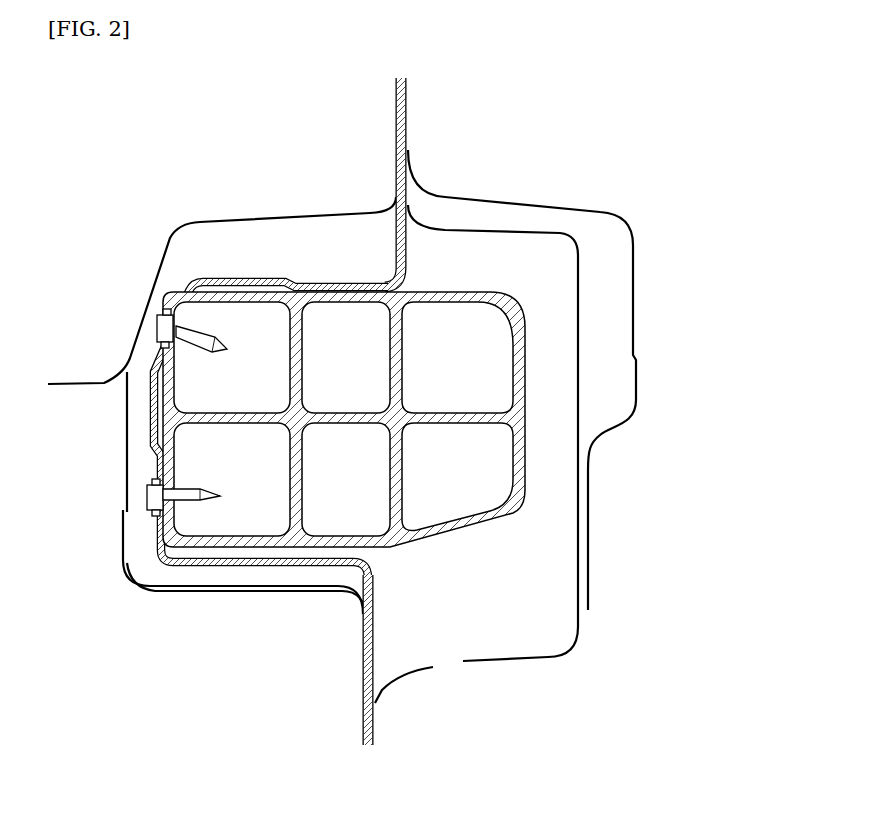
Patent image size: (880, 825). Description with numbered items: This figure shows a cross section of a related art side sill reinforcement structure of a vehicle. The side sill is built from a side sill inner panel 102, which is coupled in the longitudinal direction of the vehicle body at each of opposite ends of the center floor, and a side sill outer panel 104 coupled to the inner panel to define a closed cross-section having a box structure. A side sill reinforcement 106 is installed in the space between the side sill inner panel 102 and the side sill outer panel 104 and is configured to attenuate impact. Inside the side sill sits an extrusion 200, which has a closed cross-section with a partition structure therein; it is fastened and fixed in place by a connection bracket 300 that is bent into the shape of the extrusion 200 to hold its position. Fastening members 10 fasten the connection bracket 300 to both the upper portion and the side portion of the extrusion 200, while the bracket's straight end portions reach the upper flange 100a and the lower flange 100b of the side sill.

The fastening member 10 is at (183, 305).
The upper plate of housing 100a is at (405, 98).
The lower plate of housing 100b is at (373, 722).
The side sill inner panel 102 is at (295, 217).
The side sill outer panel 104 is at (600, 207).
The side sill reinforcement 106 is at (485, 230).
The extrusion 200 is at (523, 367).
The connection bracket 300 is at (393, 243).